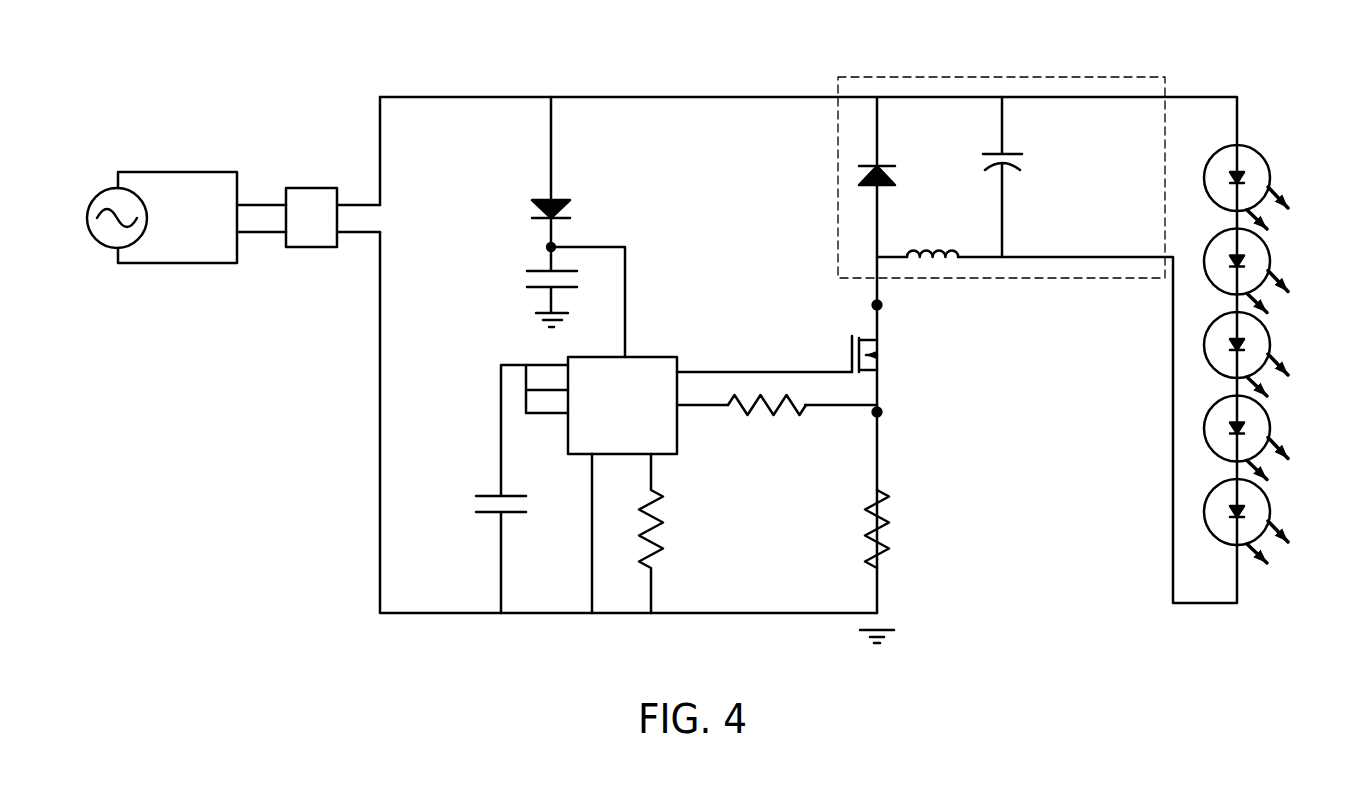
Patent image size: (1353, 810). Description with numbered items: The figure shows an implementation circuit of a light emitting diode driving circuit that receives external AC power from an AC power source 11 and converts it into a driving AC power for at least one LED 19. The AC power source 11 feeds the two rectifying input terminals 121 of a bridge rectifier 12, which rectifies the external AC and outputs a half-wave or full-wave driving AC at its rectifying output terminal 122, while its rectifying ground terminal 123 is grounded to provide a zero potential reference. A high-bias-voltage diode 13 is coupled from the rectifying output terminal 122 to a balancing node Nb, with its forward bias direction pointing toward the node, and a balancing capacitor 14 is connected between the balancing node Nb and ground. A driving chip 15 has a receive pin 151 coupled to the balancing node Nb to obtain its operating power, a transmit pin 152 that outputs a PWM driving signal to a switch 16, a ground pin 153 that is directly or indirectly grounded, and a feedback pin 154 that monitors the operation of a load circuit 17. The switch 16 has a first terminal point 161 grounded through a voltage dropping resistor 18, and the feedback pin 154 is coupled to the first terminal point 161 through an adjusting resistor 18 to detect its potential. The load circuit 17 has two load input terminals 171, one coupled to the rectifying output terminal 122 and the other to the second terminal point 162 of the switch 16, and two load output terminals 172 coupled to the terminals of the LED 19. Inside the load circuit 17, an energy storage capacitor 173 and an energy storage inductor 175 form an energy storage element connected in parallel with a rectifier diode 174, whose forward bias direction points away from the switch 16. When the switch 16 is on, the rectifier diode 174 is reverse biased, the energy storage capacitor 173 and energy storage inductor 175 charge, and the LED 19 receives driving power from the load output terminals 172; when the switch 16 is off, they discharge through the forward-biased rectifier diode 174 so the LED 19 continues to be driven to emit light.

The AC power source 11 is at (90, 200).
The bridge rectifier 12 is at (333, 188).
The rectifying input terminals 121 is at (262, 200).
The rectifying output terminal 122 is at (358, 205).
The rectifying ground terminal 123 is at (358, 233).
The high-bias-voltage diode 13 is at (517, 228).
The balancing capacitor 14 is at (510, 290).
The balancing node Nb is at (555, 243).
The driving chip 15 is at (650, 353).
The receive pin 151 is at (627, 260).
The transmit pin 152 is at (750, 372).
The ground pin 153 is at (590, 558).
The feedback pin 154 is at (717, 407).
The switch 16 is at (888, 375).
The first terminal point 161 is at (883, 417).
The second terminal point 162 is at (883, 306).
The load circuit 17 is at (1025, 75).
The load input terminals 171 is at (875, 95).
The load output terminals 172 is at (1137, 97).
The energy storage capacitor 173 is at (1035, 168).
The rectifier diode 174 is at (886, 157).
The energy storage inductor 175 is at (919, 242).
The resistor 18 is at (788, 428).
The LED 19 is at (1270, 175).